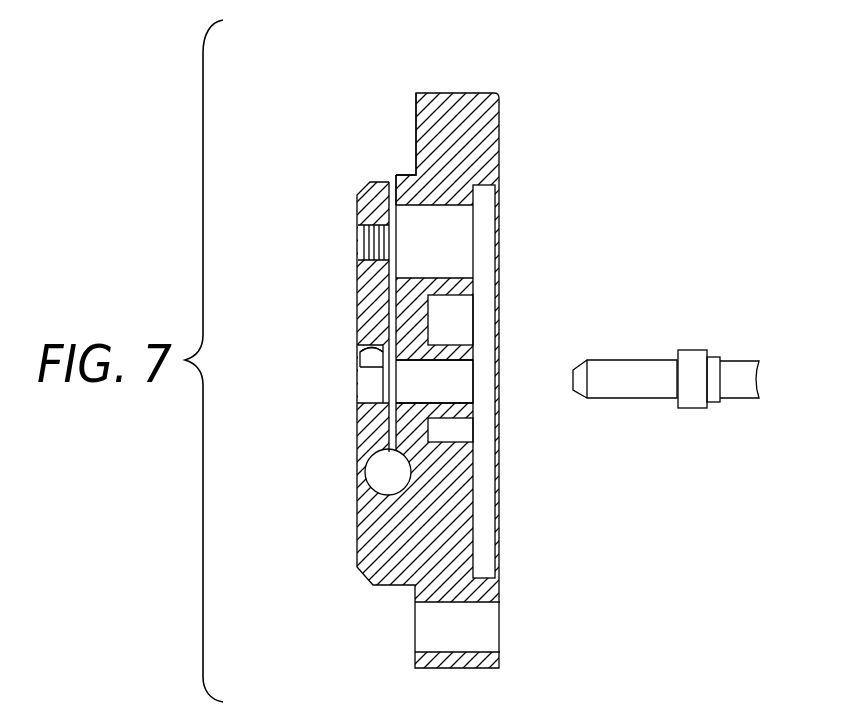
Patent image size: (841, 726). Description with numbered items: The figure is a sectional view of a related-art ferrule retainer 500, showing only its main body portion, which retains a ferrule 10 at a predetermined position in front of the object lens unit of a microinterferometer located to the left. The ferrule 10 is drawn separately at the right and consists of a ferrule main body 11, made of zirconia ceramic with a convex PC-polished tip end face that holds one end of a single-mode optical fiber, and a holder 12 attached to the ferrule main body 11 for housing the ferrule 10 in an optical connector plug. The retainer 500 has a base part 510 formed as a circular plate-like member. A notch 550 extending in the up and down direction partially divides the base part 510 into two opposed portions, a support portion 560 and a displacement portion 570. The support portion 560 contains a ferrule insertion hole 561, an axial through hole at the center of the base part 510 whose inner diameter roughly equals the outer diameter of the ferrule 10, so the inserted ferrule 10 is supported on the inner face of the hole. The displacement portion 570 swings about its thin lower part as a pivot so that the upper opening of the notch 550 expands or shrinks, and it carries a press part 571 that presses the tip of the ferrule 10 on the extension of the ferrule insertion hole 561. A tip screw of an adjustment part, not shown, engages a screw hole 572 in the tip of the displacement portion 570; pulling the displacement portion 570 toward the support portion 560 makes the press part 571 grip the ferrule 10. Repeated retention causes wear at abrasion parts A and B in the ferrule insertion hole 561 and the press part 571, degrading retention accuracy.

The ferrule retainer 500 is at (401, 344).
The base part 510 is at (355, 530).
The notch 550 is at (388, 178).
The support portion 560 is at (422, 327).
The ferrule insertion hole 561 is at (457, 388).
The displacement portion 570 is at (338, 313).
The press part 571 is at (372, 375).
The screw hole 572 is at (358, 240).
The abrasion part A is at (468, 367).
The abrasion part B is at (358, 349).
The ferrule 10 is at (666, 369).
The ferrule main body 11 is at (628, 388).
The holder 12 is at (693, 403).